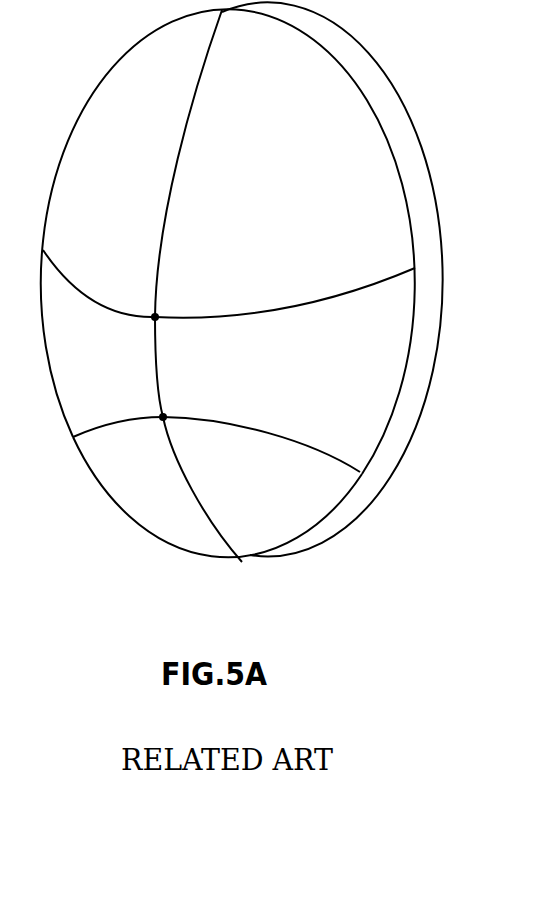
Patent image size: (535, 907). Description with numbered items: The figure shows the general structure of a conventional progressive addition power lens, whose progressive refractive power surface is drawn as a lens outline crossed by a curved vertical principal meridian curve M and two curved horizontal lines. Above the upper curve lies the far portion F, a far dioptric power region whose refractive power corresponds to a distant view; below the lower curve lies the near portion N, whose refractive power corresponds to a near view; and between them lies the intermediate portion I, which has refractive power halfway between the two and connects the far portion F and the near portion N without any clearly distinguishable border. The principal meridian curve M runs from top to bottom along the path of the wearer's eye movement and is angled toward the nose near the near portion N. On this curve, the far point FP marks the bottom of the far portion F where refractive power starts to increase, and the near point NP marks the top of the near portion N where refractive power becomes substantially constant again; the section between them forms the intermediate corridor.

The far portion F is at (308, 178).
The principal meridian curve M is at (180, 163).
The far point FP is at (155, 317).
The near point NP is at (163, 417).
The intermediate portion I is at (308, 380).
The near portion N is at (295, 508).